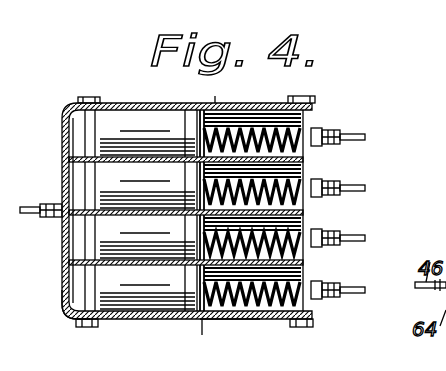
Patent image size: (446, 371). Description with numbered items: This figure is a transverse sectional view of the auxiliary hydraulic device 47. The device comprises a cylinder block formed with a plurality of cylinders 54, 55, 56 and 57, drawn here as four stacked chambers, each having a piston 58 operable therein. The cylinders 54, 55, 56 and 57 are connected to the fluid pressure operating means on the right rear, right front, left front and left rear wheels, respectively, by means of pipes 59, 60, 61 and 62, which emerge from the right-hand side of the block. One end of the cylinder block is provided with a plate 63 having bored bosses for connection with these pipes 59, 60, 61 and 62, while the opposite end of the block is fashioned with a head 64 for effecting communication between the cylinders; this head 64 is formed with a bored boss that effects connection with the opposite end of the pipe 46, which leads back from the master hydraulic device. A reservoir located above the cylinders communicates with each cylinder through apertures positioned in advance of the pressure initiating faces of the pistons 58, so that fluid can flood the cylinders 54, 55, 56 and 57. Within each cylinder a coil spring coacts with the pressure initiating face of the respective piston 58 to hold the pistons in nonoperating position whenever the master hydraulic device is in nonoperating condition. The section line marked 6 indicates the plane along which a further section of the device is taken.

The section line 6 is at (196, 97).
The cylinder 54 is at (245, 105).
The cylinder 55 is at (312, 162).
The cylinder 56 is at (312, 213).
The cylinder 57 is at (312, 264).
The piston 58 is at (95, 185).
The pipe 59 is at (355, 134).
The pipe 60 is at (355, 187).
The pipe 61 is at (357, 239).
The pipe 62 is at (357, 292).
The plate 63 is at (313, 110).
The head 64 is at (69, 303).
The pipe 46 is at (30, 214).
The auxiliary hydraulic device 47 is at (220, 321).